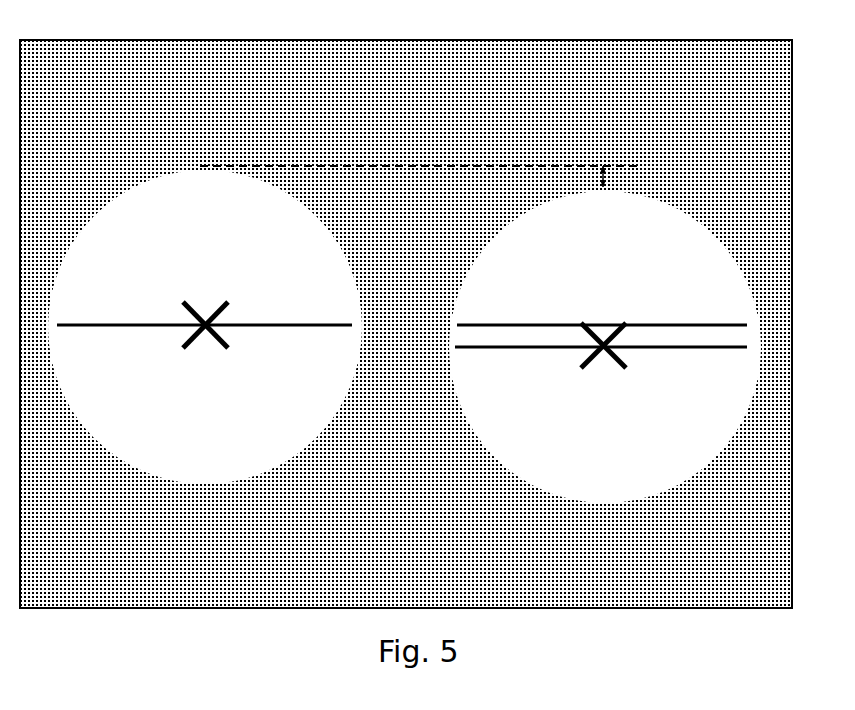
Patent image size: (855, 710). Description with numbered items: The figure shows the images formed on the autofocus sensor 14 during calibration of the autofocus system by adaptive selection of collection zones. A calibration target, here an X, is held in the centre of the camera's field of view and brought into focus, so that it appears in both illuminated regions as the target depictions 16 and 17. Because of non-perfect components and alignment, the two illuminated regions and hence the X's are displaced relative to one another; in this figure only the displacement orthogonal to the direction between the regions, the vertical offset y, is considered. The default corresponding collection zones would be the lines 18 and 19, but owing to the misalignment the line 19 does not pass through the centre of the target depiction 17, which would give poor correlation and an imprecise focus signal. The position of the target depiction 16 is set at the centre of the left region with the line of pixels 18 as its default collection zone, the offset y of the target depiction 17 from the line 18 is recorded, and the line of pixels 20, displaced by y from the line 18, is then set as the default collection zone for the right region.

The autofocus sensor 14 is at (150, 37).
The depiction of the calibration target in the primary (left) region 16 is at (190, 305).
The depiction of the calibration target in the right region 17 is at (625, 370).
The line of pixels (default collection zone for the left region) 18 is at (110, 320).
The line (default corresponding collection zone for the right region) 19 is at (515, 323).
The line of pixels (corrected default collection zone for the right region) 20 is at (530, 350).
The displacement (offset) orthogonal to the direction between the regions y is at (607, 172).